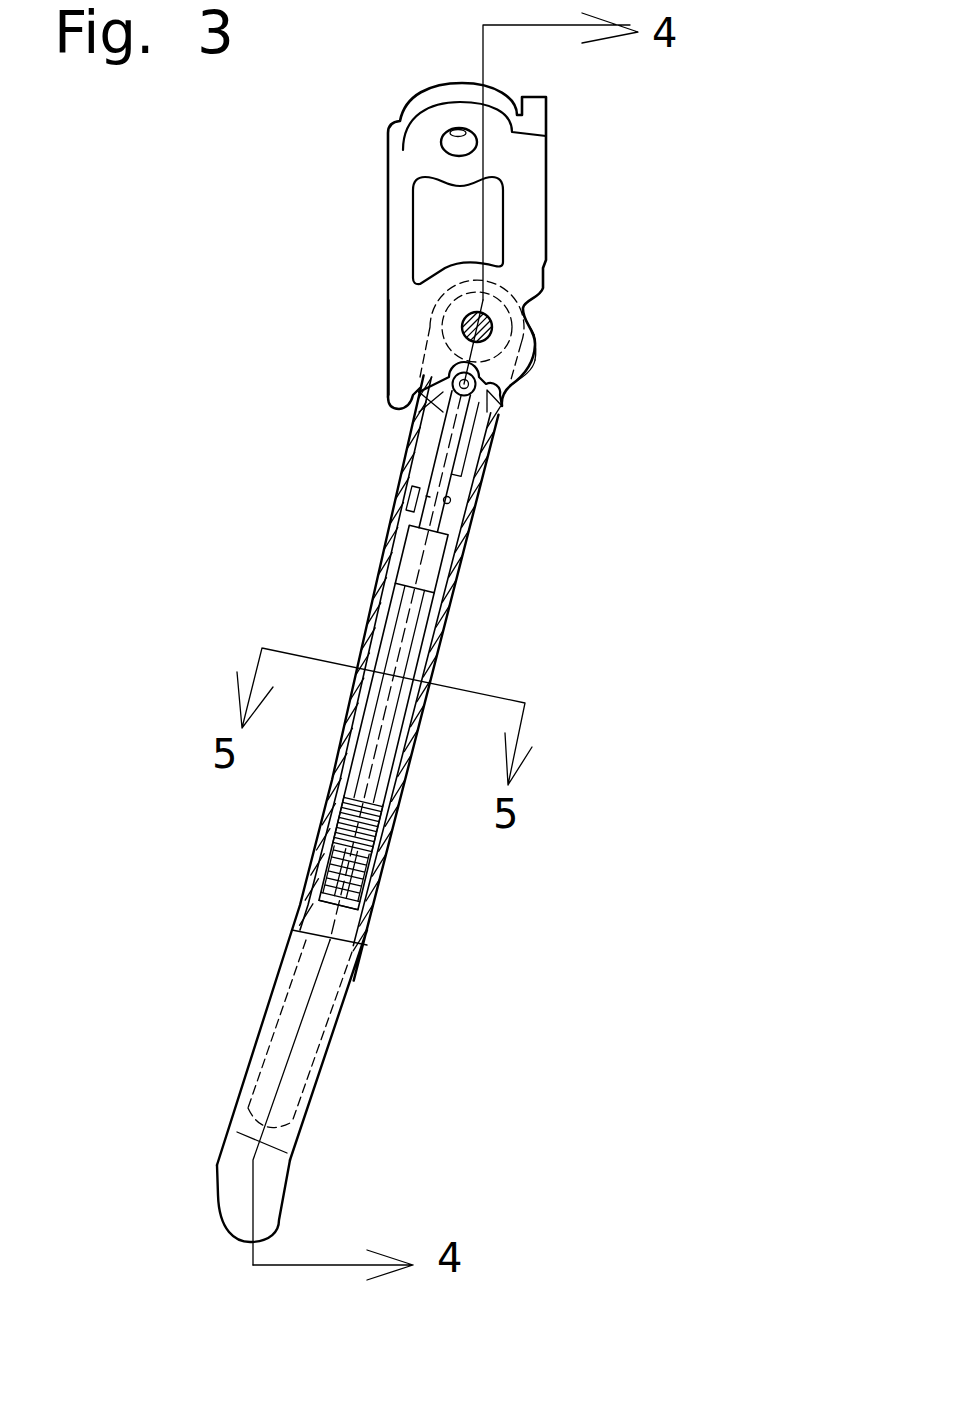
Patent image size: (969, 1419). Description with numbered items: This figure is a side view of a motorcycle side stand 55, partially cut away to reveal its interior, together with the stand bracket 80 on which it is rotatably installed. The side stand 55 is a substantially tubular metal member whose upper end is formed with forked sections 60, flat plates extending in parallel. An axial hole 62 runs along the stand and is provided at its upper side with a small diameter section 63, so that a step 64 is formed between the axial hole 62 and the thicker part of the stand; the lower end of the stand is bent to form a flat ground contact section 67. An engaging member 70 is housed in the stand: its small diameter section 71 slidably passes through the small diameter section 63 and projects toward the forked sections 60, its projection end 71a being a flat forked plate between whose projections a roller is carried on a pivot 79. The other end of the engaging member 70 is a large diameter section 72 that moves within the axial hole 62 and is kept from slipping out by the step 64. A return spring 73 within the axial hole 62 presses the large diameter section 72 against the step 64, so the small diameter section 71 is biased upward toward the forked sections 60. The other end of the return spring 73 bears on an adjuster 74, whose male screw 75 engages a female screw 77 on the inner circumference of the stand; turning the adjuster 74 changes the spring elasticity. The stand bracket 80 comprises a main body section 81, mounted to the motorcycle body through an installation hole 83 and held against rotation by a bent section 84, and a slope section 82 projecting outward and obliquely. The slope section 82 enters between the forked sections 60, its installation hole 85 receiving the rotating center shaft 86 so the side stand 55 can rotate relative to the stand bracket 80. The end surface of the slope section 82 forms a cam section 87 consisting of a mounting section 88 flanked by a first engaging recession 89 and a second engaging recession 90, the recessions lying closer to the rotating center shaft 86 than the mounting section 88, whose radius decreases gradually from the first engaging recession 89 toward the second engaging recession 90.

The side stand 55 is at (380, 567).
The forked sections 60 is at (502, 398).
The axial hole 62 is at (395, 755).
The small diameter section 63 is at (451, 500).
The step 64 is at (412, 500).
The ground contact section 67 is at (237, 1198).
The engaging member 70 is at (419, 487).
The small diameter section 71 is at (453, 462).
The projection end 71a is at (493, 432).
The large diameter section 72 is at (432, 570).
The return spring 73 is at (412, 660).
The adjuster 74 is at (327, 863).
The male screw 75 is at (373, 883).
The female screw 77 is at (338, 818).
The pivot 79 is at (398, 410).
The stand bracket 80 is at (378, 176).
The main body section 81 is at (532, 166).
The slope section 82 is at (402, 345).
The installation hole 83 is at (455, 137).
The bent section 84 is at (533, 105).
The installation hole 85 is at (510, 321).
The rotating center shaft 86 is at (533, 317).
The cam section 87 is at (548, 373).
The mounting section 88 is at (523, 378).
The first engaging recession 89 is at (450, 380).
The second engaging recession 90 is at (548, 302).